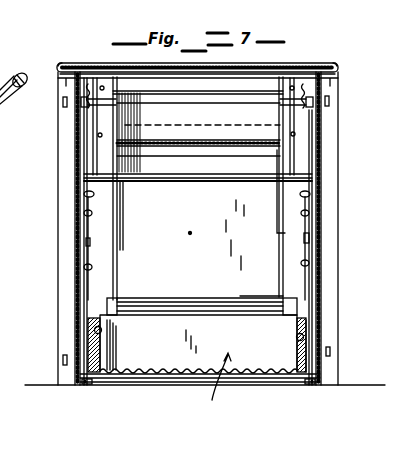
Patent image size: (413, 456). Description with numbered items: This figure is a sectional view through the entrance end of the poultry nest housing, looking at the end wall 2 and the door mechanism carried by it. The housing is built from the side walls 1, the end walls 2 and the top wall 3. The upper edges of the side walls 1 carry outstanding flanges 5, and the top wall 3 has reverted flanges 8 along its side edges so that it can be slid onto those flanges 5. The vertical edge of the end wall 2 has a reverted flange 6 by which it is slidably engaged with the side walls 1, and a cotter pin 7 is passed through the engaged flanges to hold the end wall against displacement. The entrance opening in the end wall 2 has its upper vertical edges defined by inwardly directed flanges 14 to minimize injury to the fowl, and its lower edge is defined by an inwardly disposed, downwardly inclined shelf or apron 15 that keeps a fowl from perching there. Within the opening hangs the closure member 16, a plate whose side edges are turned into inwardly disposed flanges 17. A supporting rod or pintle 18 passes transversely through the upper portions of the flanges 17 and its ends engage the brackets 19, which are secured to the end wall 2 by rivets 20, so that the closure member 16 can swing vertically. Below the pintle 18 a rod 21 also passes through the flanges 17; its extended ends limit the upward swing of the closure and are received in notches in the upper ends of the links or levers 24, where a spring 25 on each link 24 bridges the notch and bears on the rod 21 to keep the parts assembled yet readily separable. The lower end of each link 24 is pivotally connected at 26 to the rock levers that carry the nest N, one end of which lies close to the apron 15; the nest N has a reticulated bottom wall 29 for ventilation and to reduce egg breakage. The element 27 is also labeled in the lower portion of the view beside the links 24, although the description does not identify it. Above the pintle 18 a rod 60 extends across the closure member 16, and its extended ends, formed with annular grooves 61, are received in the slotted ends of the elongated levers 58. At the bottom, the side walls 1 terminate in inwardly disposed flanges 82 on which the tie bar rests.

The side wall 1 is at (77, 292).
The end wall 2 is at (100, 301).
The top wall 3 is at (107, 68).
The outstanding flange 5 is at (65, 66).
The reverted flange 6 is at (58, 249).
The cotter pin 7 is at (62, 103).
The reverted flange 8 is at (58, 80).
The inwardly directed flange 14 is at (110, 221).
The shelf or apron 15 is at (170, 308).
The closure member 16 is at (258, 281).
The inwardly disposed flange 17 is at (118, 262).
The supporting rod or pintle 18 is at (238, 146).
The bracket 19 is at (106, 119).
The rivet 20 is at (98, 136).
The rod 21 is at (194, 180).
The link or lever 24 is at (86, 268).
The spring 25 is at (86, 209).
The pivotal connection 26 is at (318, 360).
The hatched post 27 is at (95, 329).
The reticulated bottom wall 29 is at (165, 372).
The elongated lever 58 is at (87, 80).
The rod 60 is at (220, 104).
The annular groove 61 is at (86, 107).
The inwardly disposed flange 82 is at (84, 388).
The nest N is at (218, 388).